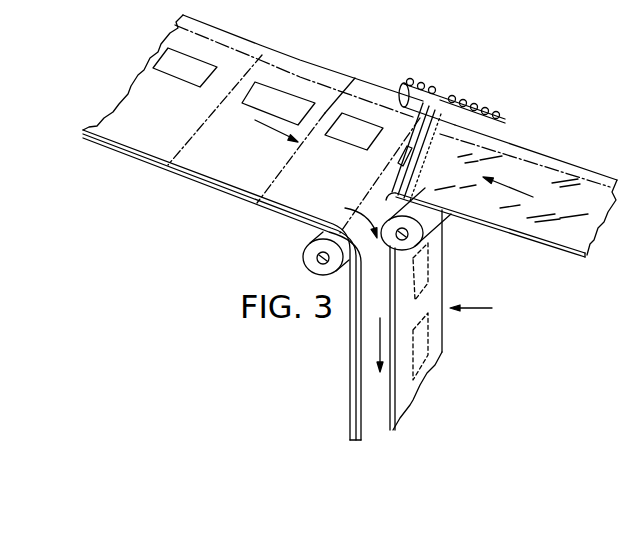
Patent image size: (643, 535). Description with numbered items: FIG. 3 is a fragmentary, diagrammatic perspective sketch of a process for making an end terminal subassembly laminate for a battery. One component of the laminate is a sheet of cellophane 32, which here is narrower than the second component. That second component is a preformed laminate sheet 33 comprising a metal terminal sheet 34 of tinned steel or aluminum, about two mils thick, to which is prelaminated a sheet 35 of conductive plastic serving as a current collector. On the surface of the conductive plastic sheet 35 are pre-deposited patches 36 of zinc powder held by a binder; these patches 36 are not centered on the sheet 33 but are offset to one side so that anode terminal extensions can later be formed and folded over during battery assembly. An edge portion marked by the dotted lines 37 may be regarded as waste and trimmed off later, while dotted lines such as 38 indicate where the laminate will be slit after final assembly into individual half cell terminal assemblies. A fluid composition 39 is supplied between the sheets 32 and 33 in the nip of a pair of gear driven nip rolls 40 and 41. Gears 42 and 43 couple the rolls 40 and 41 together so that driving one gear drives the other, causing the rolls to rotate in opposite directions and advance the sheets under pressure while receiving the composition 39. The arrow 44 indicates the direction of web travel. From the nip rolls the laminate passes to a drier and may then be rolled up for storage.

The sheet of cellophane 32 is at (560, 230).
The sheet 33 is at (209, 199).
The metal terminal sheet 34 is at (170, 172).
The sheet of conductive plastic 35 is at (124, 132).
The patches of zinc powder 36 is at (162, 64).
The dotted lines 37 is at (365, 104).
The dotted lines 38 is at (196, 133).
The fluid composition 39 is at (402, 177).
The nip roll 40 is at (306, 254).
The nip roll 41 is at (386, 244).
The gear 42 is at (438, 85).
The gear 43 is at (497, 113).
The direction of web travel arrow 44 is at (484, 309).